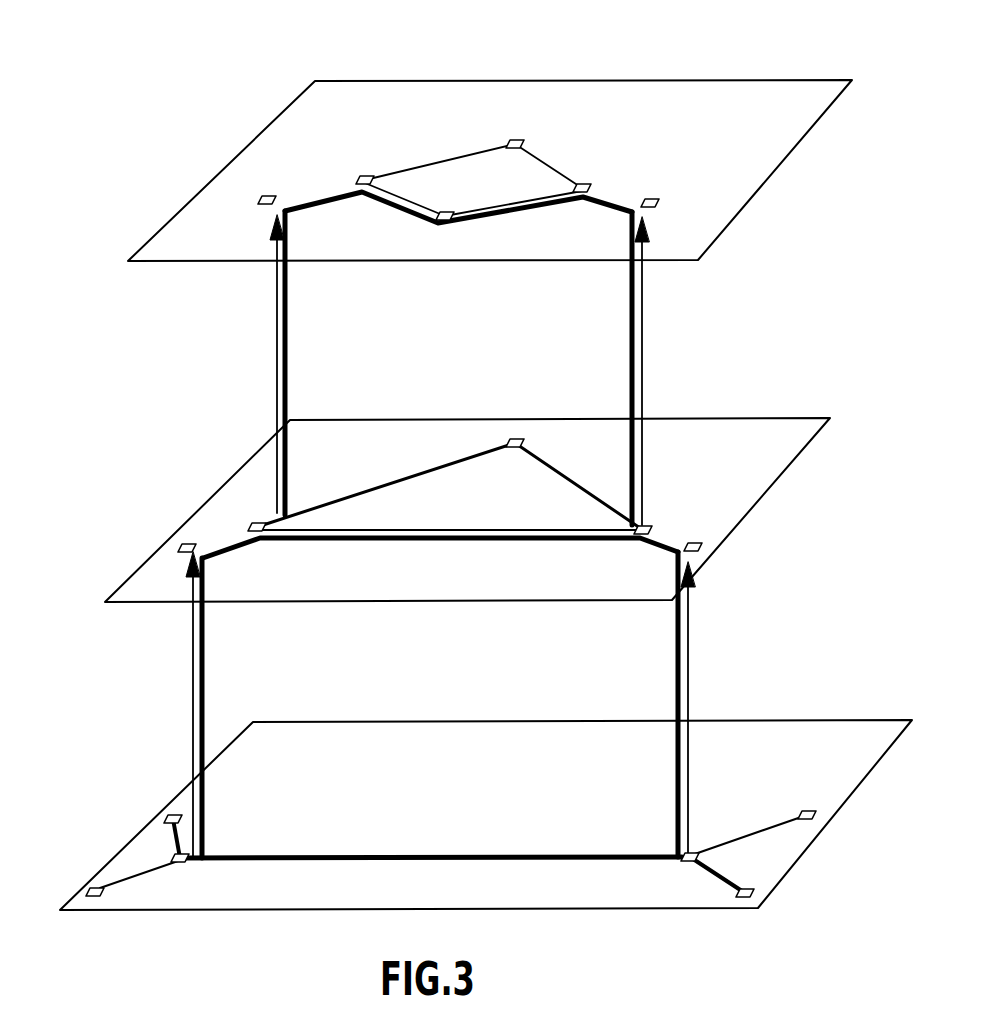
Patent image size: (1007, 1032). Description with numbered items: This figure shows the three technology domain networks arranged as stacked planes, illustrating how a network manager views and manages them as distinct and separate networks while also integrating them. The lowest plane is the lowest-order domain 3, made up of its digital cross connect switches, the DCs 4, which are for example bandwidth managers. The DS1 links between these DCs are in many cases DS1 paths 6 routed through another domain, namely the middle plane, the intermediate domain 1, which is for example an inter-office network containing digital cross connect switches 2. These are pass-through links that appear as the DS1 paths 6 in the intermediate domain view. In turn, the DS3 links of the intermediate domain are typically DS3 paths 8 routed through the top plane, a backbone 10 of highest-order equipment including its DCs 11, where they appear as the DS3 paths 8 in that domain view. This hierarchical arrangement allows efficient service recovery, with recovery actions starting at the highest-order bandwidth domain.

The backbone 10 is at (680, 86).
The 3/3 DCs 11 is at (262, 201).
The DS3 paths 8 is at (635, 354).
The 3/1 domain 1 is at (420, 421).
The 3/1 digital cross connect switches 2 is at (180, 548).
The DS1 paths 6 is at (681, 681).
The 3/1/0 domain 3 is at (485, 722).
The 3/1/0 DCs 4 is at (93, 886).